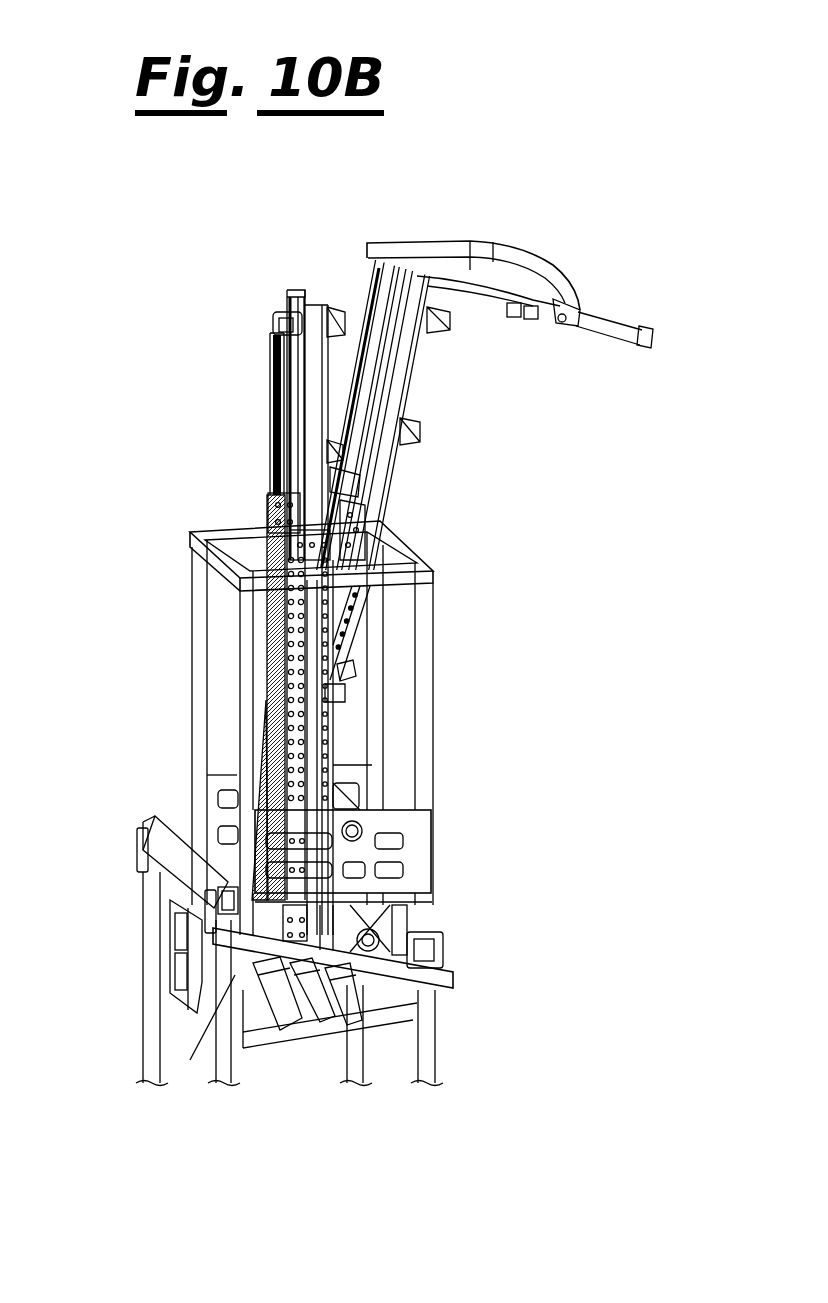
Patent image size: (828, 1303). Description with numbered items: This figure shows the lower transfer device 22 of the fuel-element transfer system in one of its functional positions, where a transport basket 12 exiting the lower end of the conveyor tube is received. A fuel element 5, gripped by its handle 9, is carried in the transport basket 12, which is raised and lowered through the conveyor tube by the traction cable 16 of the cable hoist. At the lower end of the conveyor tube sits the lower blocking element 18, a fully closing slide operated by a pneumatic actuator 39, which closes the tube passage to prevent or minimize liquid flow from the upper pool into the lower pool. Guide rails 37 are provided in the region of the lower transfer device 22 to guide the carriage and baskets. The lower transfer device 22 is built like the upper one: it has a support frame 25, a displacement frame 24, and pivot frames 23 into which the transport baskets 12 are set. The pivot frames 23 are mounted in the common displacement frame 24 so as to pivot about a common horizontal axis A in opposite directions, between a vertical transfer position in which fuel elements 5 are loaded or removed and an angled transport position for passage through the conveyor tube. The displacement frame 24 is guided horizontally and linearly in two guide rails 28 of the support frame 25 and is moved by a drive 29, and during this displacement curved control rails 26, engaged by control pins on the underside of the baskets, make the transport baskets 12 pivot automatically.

The fuel element 5 is at (293, 420).
The handle 9 is at (288, 318).
The transport basket 12 is at (345, 627).
The traction cable 16 is at (373, 307).
The lower blocking element 18 is at (490, 260).
The lower transfer device 22 is at (165, 548).
The pivot frame 23 is at (346, 690).
The displacement frame 24 is at (433, 773).
The support frame 25 is at (177, 898).
The control rail 26 is at (250, 960).
The guide rail 28 is at (198, 876).
The drive 29 is at (393, 930).
The guide rail 37 is at (313, 467).
The pneumatic actuator 39 is at (617, 313).
The axis A is at (363, 829).